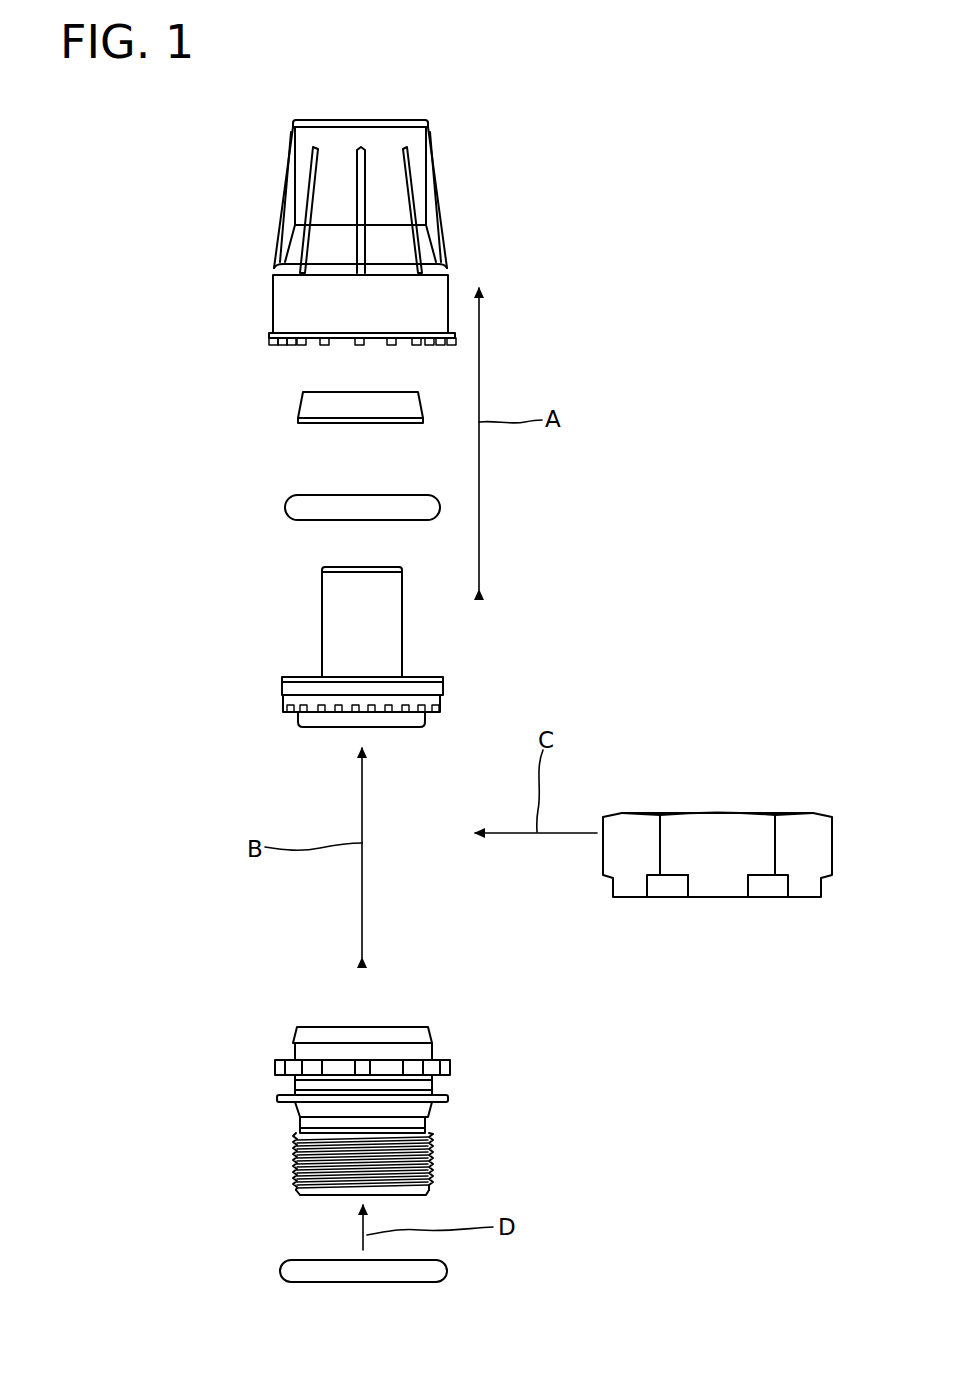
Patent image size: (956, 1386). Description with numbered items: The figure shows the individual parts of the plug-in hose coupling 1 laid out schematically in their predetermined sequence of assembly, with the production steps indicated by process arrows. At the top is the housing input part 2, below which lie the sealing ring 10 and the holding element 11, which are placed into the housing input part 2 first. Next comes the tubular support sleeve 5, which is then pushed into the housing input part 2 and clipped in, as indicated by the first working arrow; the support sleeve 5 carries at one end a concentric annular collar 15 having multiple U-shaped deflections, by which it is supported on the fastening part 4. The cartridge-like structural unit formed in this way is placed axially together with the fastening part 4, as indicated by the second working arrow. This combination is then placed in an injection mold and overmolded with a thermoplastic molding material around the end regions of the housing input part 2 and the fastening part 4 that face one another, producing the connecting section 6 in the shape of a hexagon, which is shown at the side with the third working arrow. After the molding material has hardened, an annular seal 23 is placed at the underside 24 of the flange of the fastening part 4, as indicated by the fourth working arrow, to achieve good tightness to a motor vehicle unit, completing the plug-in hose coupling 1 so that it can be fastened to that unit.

The plug-in hose coupling 1 is at (600, 244).
The housing input part 2 is at (288, 207).
The fastening part 4 is at (262, 1058).
The support sleeve 5 is at (330, 607).
The connecting section 6 is at (707, 827).
The sealing ring 10 is at (297, 504).
The holding element 11 is at (308, 403).
The annular collar 15 is at (288, 687).
The annular seal 23 is at (293, 1272).
The underside 24 is at (283, 1103).